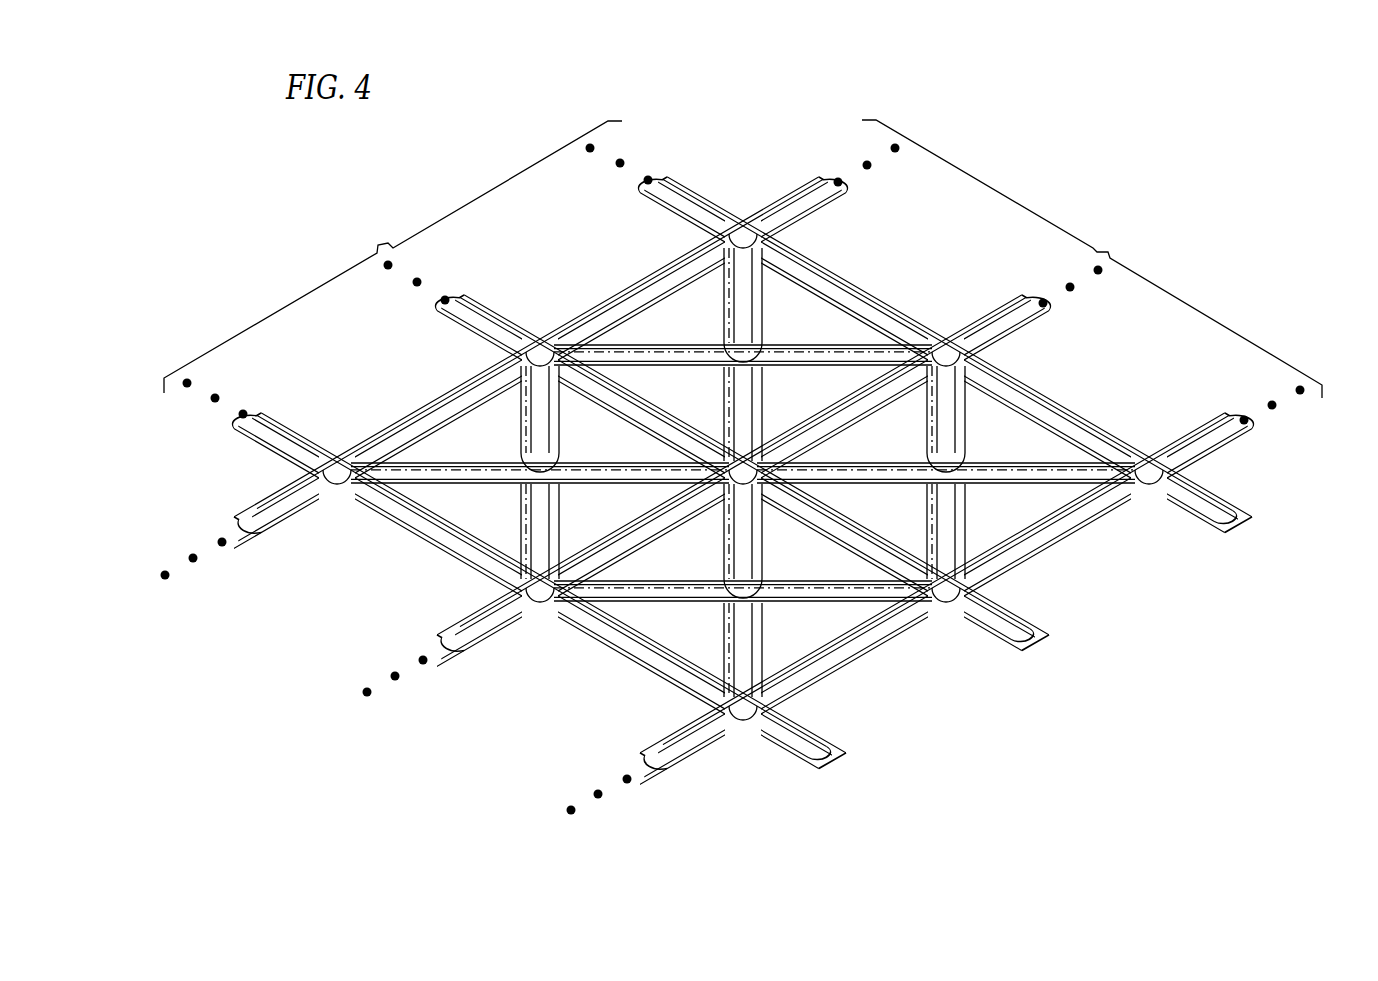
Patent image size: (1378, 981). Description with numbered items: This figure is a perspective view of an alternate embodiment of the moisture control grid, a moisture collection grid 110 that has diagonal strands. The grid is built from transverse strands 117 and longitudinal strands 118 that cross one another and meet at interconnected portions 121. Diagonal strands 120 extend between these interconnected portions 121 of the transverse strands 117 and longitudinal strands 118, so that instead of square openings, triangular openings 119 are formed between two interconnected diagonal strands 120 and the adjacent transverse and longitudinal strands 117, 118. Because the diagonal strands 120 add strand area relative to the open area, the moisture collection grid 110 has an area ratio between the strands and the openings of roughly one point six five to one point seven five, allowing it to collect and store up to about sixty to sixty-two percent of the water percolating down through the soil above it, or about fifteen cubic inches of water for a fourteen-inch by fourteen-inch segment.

The moisture collection grid 110 is at (762, 137).
The transverse strands 117 is at (1092, 259).
The longitudinal strands 118 is at (393, 257).
The triangular openings 119 is at (823, 387).
The diagonal strands 120 is at (807, 355).
The interconnected portions 121 is at (737, 239).